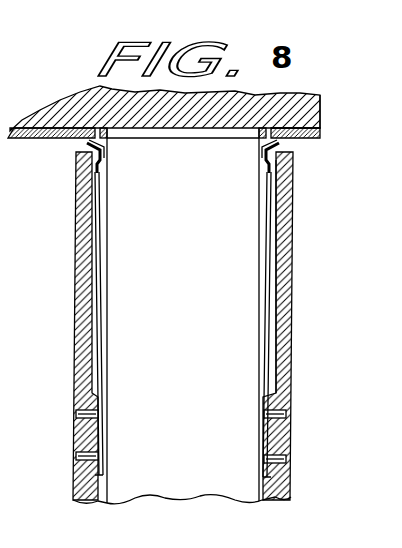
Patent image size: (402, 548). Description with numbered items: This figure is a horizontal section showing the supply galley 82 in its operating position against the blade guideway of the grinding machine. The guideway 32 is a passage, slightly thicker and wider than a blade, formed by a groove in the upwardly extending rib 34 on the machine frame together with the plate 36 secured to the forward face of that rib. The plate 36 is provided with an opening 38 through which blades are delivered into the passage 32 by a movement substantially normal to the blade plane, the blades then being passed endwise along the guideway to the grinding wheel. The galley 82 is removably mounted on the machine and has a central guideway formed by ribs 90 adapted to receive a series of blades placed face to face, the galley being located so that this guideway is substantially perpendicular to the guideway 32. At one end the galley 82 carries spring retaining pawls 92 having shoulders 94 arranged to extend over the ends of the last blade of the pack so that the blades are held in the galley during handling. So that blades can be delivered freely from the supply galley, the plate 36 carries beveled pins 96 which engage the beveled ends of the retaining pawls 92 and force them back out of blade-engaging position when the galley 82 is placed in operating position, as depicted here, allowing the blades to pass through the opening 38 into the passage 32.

The guideway 32 is at (307, 123).
The rib 34 is at (77, 97).
The plate 36 is at (58, 138).
The opening 38 is at (203, 136).
The galley 82 is at (288, 230).
The ribs 90 is at (80, 482).
The spring retaining pawls 92 is at (98, 308).
The shoulders 94 is at (104, 161).
The beveled pins 96 is at (101, 144).